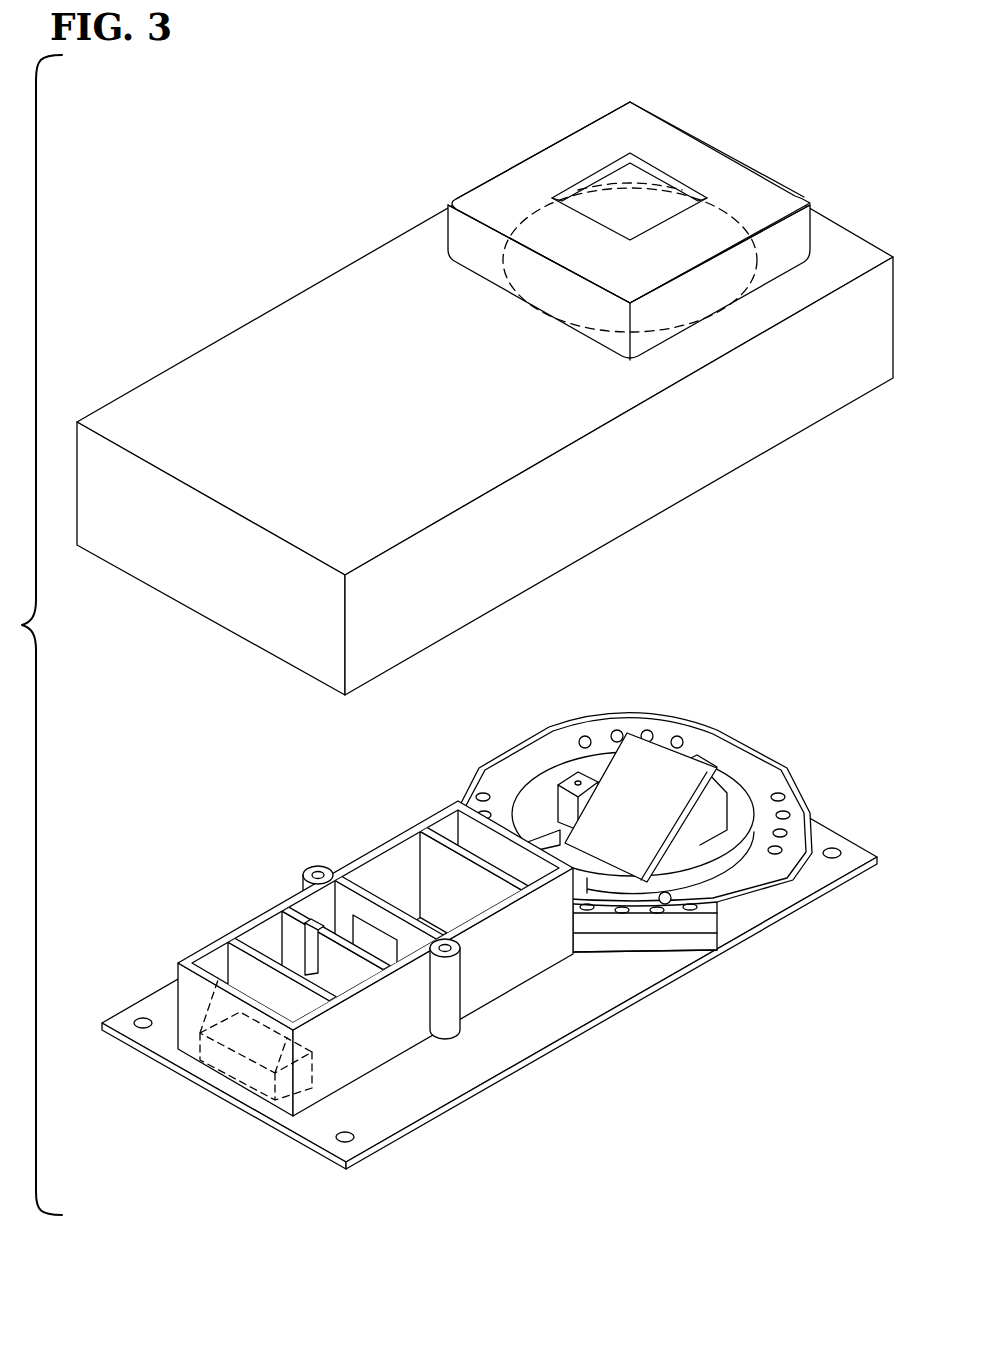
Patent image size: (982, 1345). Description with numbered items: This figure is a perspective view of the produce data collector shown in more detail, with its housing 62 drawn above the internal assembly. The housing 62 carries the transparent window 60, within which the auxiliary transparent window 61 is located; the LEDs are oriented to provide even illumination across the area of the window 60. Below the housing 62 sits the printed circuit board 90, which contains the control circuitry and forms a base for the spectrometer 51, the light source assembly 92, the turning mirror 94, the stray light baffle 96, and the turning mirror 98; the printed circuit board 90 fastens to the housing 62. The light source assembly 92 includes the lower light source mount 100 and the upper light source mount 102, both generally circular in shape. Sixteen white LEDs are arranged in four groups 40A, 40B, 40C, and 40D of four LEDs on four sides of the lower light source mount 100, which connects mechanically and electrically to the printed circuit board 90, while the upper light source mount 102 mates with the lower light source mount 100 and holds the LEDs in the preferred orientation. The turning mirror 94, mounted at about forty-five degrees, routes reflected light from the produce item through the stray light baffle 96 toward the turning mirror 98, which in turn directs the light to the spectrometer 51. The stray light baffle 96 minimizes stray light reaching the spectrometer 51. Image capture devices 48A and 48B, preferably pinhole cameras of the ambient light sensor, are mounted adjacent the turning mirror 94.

The group of LEDs 40A is at (585, 736).
The group of LEDs 40B is at (785, 797).
The group of LEDs 40C is at (667, 904).
The group of LEDs 40D is at (478, 795).
The image capture device 48A is at (556, 786).
The image capture device 48B is at (710, 763).
The spectrometer 51 is at (230, 1050).
The transparent window 60 is at (603, 175).
The auxiliary transparent window 61 is at (638, 185).
The housing 62 is at (730, 447).
The printed circuit board 90 is at (483, 1097).
The light source assembly 92 is at (792, 768).
The turning mirror 94 is at (657, 763).
The stray light baffle 96 is at (358, 1050).
The turning mirror 98 is at (285, 1065).
The lower light source mount 100 is at (624, 948).
The upper light source mount 102 is at (740, 910).